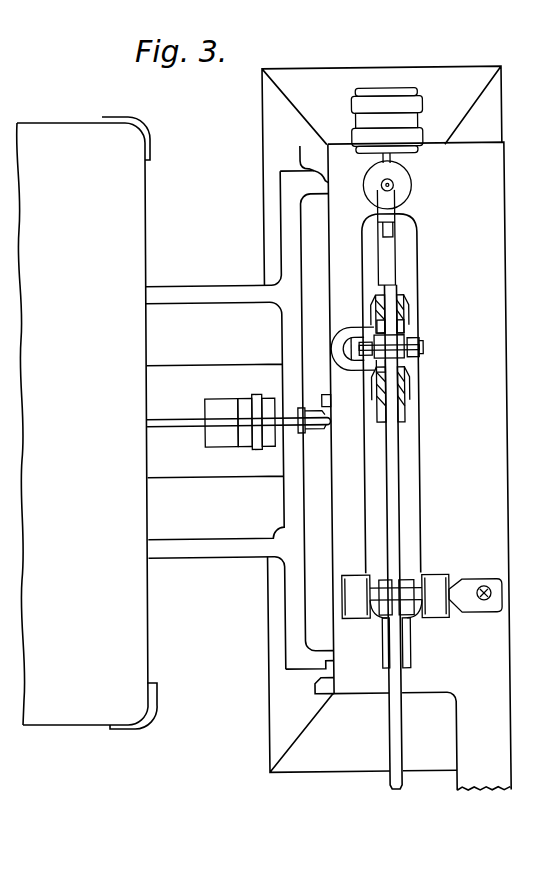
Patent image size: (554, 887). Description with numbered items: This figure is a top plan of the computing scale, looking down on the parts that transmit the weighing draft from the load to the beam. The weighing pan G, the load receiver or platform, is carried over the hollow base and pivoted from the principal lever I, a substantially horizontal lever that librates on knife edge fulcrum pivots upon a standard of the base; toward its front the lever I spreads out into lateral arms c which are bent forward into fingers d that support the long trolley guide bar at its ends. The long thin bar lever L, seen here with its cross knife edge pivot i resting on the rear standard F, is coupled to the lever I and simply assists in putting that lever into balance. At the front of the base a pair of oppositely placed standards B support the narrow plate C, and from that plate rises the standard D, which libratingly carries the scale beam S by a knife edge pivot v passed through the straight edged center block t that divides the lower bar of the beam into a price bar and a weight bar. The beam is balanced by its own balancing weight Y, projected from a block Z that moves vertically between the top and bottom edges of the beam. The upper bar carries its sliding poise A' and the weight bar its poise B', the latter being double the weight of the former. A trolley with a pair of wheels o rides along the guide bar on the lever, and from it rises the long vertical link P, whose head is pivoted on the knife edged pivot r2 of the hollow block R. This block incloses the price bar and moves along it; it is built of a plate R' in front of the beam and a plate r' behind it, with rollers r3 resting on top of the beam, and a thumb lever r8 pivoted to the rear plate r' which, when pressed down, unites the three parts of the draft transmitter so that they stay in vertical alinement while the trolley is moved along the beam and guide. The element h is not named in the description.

The weighing pan G is at (87, 423).
The lever I is at (210, 552).
The bar lever L is at (173, 408).
The standard F is at (234, 440).
The cross knife edge pivot i is at (256, 395).
The rod end fitting h is at (312, 431).
The fingers d is at (313, 172).
The lateral arms c is at (297, 240).
The standards B is at (328, 422).
The narrow plate C is at (419, 466).
The balancing weight Y is at (384, 92).
The block Z is at (408, 187).
The sliding poise A' is at (416, 237).
The scale beam S is at (393, 500).
The wheels o is at (377, 302).
The plate r' is at (419, 317).
The rollers r3 is at (404, 330).
The knife edged pivot r2 is at (420, 348).
The thumb lever r8 is at (343, 347).
The link P is at (409, 358).
The plate R' is at (354, 339).
The hollow block R is at (357, 386).
The standard D is at (432, 602).
The center block t is at (382, 586).
The knife edge pivot v is at (427, 574).
The poise B' is at (421, 651).